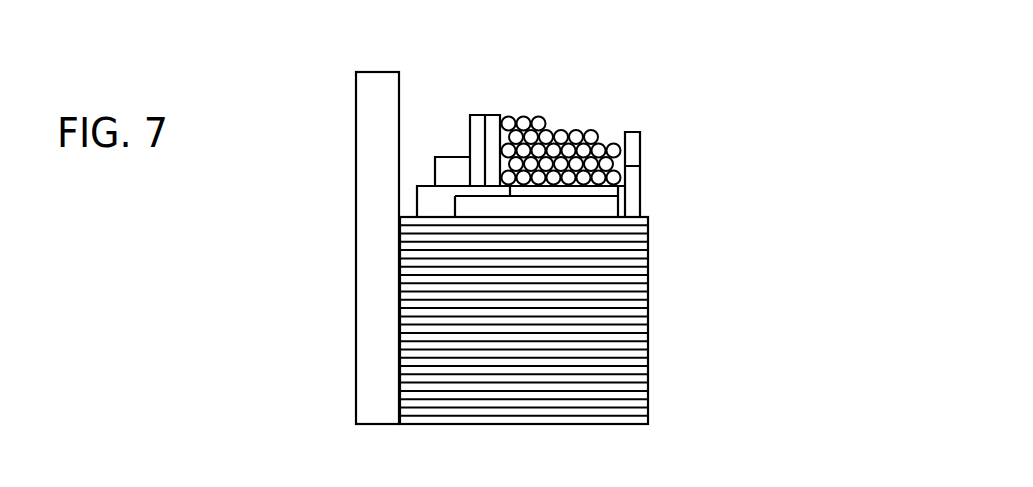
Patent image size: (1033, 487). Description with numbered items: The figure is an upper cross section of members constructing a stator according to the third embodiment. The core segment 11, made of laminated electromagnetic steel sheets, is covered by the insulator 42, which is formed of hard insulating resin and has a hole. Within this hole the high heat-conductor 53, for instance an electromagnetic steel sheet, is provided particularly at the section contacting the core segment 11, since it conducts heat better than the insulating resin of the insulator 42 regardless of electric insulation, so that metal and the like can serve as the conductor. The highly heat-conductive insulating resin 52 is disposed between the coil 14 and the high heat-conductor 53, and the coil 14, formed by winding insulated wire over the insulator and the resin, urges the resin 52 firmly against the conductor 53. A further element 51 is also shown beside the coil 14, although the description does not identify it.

The core segment 11 is at (648, 333).
The coil 14 is at (597, 125).
The insulator 42 is at (635, 200).
The right post 51 is at (663, 114).
The highly heat-conductive insulating resin 52 is at (607, 191).
The high heat-conductor 53 is at (465, 196).